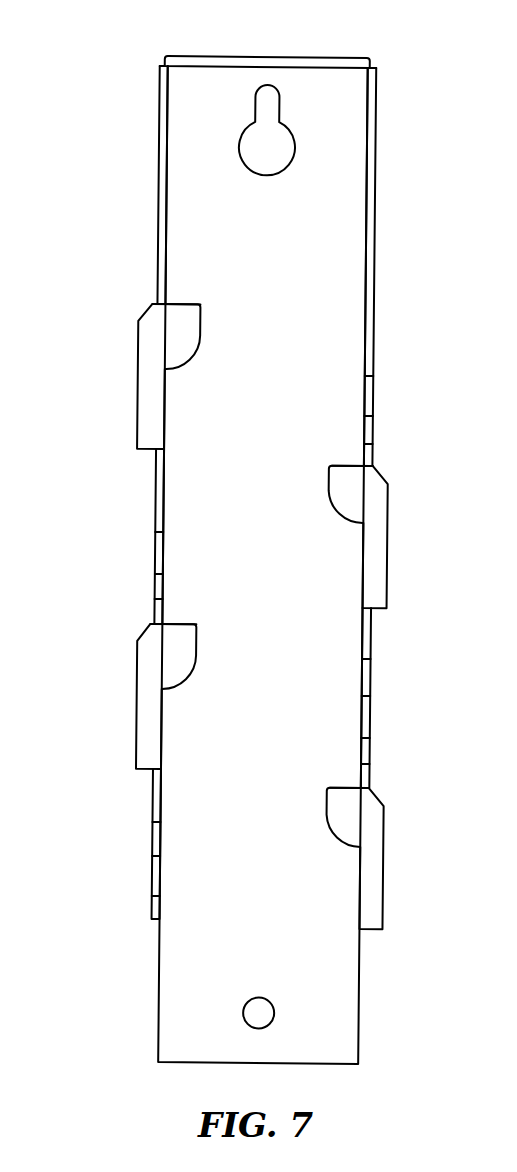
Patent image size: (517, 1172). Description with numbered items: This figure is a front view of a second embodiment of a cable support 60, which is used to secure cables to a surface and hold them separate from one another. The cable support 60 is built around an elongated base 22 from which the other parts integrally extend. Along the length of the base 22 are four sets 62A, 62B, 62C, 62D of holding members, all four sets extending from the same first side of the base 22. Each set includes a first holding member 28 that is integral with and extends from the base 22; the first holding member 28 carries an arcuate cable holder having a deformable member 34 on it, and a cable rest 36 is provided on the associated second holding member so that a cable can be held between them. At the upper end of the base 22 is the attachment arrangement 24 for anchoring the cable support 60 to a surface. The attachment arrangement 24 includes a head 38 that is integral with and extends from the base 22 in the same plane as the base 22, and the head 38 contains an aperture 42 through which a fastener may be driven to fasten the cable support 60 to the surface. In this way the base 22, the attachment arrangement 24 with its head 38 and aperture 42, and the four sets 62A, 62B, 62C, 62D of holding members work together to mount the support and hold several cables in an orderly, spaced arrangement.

The base 22 is at (288, 947).
The attachment arrangement 24 is at (100, 126).
The first holding member 28 is at (138, 364).
The deformable member 34 is at (180, 338).
The cable rest 36 is at (378, 370).
The head 38 is at (349, 117).
The aperture 42 is at (269, 108).
The cable support 60 is at (434, 434).
The first set of holding members 62A is at (362, 391).
The second set of holding members 62B is at (362, 527).
The third set of holding members 62C is at (359, 710).
The fourth set of holding members 62D is at (357, 842).